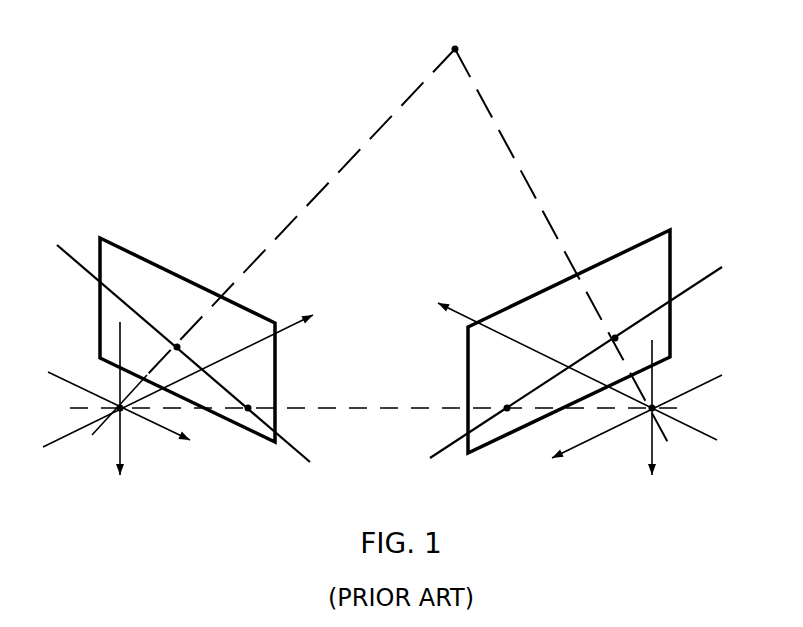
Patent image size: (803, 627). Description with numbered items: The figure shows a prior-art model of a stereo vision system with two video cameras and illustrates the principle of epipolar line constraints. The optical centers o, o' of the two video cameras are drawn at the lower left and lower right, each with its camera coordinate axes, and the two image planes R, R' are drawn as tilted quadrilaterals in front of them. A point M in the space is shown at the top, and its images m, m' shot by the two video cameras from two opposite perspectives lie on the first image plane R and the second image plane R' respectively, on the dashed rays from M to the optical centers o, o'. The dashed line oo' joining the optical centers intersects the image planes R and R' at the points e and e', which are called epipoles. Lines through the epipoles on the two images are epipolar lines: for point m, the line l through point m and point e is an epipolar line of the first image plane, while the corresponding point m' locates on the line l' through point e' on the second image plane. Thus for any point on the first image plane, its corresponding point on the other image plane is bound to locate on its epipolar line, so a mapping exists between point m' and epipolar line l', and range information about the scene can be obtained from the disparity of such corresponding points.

The space point M is at (460, 31).
The first image plane R is at (187, 340).
The second image plane R' is at (569, 341).
The epipolar line of the first image plane l is at (175, 345).
The epipolar line of the second image plane l' is at (586, 354).
The image of the space point m is at (273, 242).
The corresponding point m' is at (563, 249).
The epipole e is at (380, 395).
The epipole e' is at (518, 392).
The optical center o is at (178, 395).
The optical center o' is at (580, 389).